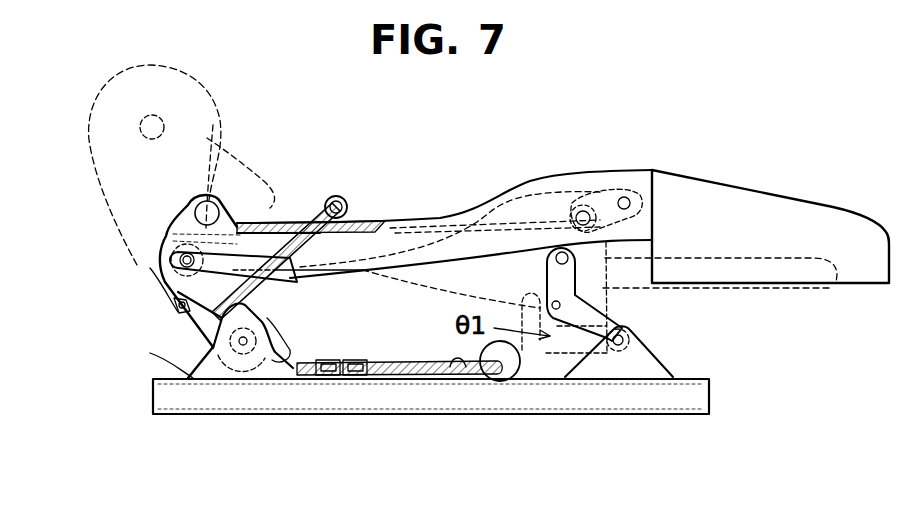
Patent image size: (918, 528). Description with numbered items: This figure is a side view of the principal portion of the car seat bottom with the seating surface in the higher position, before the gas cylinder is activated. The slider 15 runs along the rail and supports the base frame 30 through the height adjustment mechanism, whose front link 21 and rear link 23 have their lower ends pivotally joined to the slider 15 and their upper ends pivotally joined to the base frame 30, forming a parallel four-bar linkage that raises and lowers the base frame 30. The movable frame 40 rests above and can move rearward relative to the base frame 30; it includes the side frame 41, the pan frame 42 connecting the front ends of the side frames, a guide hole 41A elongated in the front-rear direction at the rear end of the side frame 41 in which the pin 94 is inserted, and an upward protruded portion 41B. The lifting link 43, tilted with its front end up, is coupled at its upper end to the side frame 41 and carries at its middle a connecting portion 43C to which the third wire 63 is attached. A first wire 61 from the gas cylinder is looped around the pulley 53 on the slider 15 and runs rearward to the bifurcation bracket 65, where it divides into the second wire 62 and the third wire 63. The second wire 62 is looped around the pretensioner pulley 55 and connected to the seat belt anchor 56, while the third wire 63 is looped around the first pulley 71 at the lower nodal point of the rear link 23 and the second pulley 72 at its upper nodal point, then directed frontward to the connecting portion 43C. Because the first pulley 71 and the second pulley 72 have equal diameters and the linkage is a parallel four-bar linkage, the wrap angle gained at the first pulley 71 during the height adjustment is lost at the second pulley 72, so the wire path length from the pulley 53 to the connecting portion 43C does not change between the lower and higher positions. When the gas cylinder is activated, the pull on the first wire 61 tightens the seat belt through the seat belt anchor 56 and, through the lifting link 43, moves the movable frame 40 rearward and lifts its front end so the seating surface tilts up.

The slider 15 is at (605, 404).
The front link 21 is at (612, 320).
The rear link 23 is at (185, 336).
The base frame 30 is at (209, 98).
The movable frame 40 is at (746, 209).
The side frame 41 is at (516, 186).
The guide hole 41A is at (268, 230).
The protruded portion 41B is at (175, 224).
The pan frame 42 is at (775, 192).
The lifting link 43 is at (611, 186).
The connecting portion 43C is at (580, 208).
The pulley 53 is at (463, 385).
The pretensioner pulley 55 is at (277, 406).
The seat belt anchor 56 is at (347, 202).
The first wire 61 is at (413, 375).
The second wire 62 is at (268, 287).
The third wire 63 is at (296, 228).
The bifurcation bracket 65 is at (342, 376).
The first pulley 71 is at (243, 341).
The second pulley 72 is at (211, 150).
The pin 94 is at (168, 290).